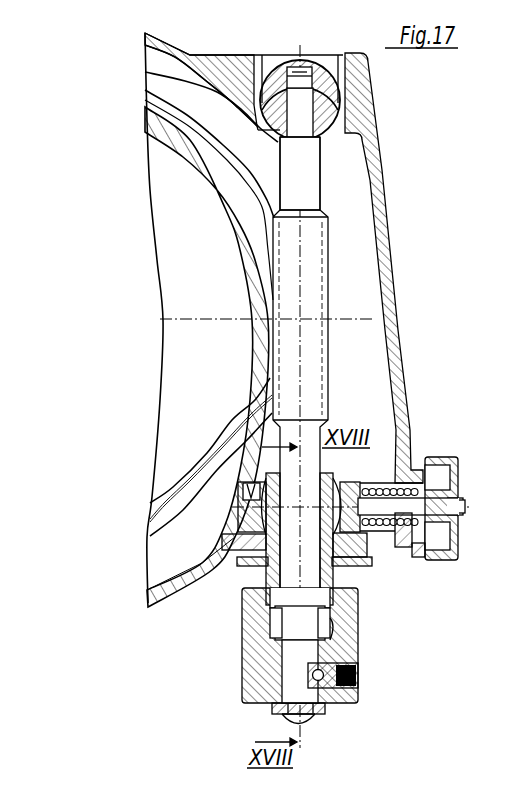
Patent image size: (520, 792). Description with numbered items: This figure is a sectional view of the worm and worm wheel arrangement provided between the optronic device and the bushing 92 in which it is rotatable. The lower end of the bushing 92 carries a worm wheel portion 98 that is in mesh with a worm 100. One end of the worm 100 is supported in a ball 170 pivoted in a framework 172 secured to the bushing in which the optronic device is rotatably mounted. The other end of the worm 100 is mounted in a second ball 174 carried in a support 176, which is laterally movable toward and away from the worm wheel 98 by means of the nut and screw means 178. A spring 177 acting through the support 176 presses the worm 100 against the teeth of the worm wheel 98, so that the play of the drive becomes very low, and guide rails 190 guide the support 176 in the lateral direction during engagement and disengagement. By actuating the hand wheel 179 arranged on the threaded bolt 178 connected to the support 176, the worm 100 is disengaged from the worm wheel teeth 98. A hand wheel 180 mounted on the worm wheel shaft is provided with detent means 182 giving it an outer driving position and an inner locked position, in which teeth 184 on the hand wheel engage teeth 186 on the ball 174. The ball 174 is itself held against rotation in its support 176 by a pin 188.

The ball 170 is at (347, 108).
The worm wheel portion 98 is at (220, 170).
The bushing 92 is at (245, 232).
The framework 172 is at (384, 261).
The worm 100 is at (313, 382).
The ball 174 is at (331, 473).
The spring 177 is at (376, 487).
The hand wheel 179 is at (455, 477).
The guide rails 190 is at (468, 509).
The nut and screw means 178 is at (457, 525).
The support 176 is at (383, 533).
The teeth 186 is at (357, 607).
The teeth 184 is at (358, 643).
The detent means 182 is at (358, 688).
The hand wheel 180 is at (247, 676).
The pin 188 is at (202, 557).